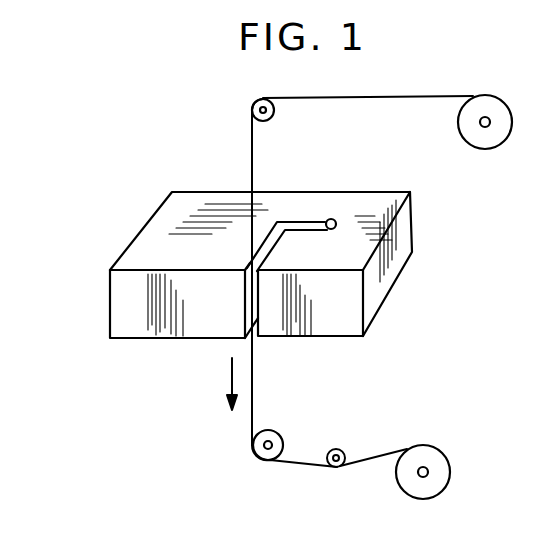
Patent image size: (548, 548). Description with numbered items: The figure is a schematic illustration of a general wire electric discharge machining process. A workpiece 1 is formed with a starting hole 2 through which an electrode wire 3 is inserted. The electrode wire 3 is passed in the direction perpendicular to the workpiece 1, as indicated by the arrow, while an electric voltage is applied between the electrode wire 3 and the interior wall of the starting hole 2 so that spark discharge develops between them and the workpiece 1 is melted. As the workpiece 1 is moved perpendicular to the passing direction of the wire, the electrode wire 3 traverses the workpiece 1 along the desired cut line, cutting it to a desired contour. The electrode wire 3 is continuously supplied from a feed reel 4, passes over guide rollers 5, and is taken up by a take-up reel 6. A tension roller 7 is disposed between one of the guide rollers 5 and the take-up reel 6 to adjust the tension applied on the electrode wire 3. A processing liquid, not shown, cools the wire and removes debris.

The workpiece 1 is at (135, 253).
The starting hole 2 is at (332, 217).
The electrode wire 3 is at (383, 96).
The feed reel 4 is at (493, 104).
The guide rollers 5 is at (273, 116).
The take-up reel 6 is at (433, 457).
The tension roller 7 is at (334, 449).